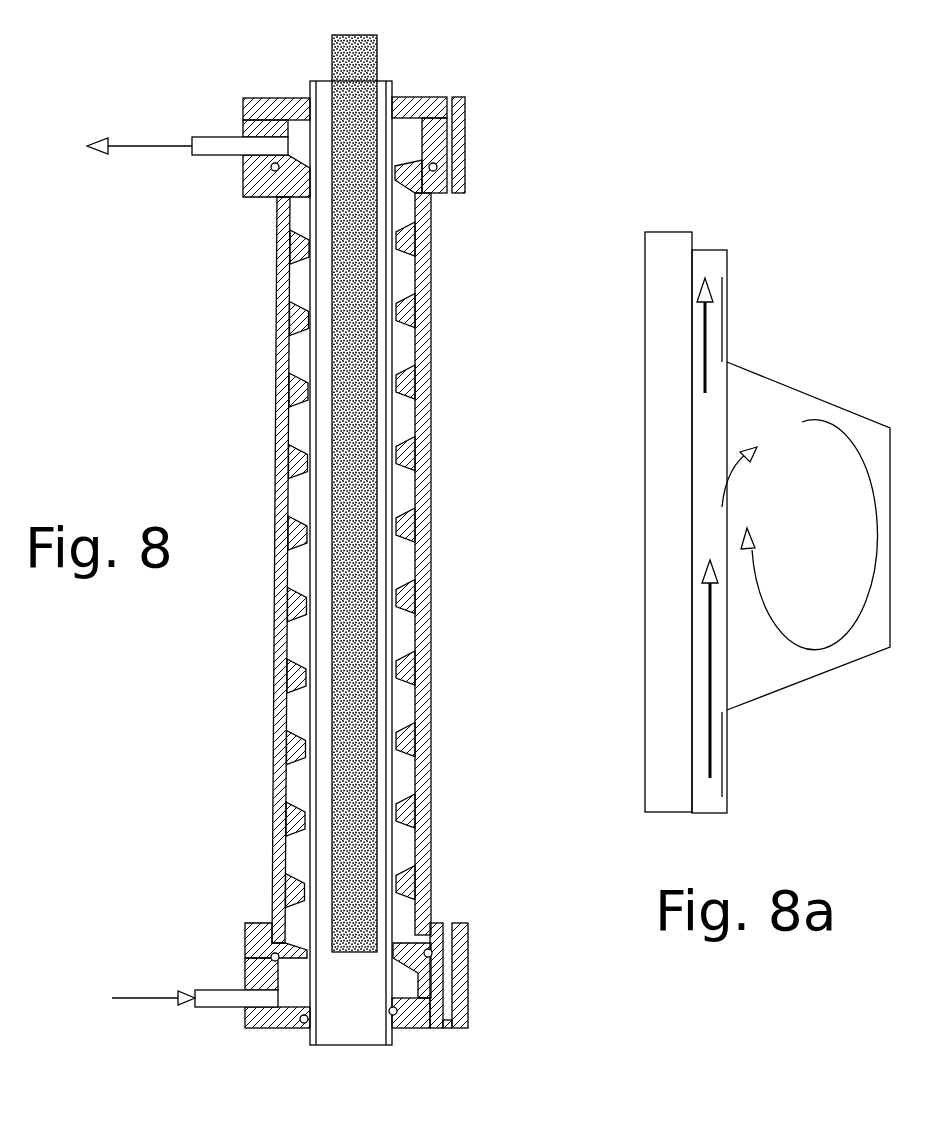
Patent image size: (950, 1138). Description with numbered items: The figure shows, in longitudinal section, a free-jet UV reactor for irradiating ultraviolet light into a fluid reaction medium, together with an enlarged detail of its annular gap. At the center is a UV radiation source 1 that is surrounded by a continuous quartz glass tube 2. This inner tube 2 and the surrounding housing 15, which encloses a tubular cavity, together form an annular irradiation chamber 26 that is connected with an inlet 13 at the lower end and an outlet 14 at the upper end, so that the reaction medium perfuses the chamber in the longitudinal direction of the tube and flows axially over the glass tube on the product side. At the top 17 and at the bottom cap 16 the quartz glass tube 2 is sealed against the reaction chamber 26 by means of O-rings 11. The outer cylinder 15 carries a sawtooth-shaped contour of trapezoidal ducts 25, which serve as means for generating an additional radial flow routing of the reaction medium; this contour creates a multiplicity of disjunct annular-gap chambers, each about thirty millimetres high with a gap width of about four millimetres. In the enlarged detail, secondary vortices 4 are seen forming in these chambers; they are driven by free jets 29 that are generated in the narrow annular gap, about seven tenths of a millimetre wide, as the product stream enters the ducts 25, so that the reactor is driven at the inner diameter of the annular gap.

In FIG. 8, the UV radiation source 1 is at (377, 68).
In FIG. 8, the quartz glass tube 2 is at (392, 87).
In FIG. 8a, the quartz glass tube 2 is at (677, 510).
In FIG. 8a, the secondary vortices 4 is at (815, 652).
In FIG. 8, the O-rings 11 is at (312, 100).
In FIG. 8, the inlet 13 is at (212, 988).
In FIG. 8, the outlet 14 is at (223, 135).
In FIG. 8, the housing 15 is at (432, 263).
In FIG. 8, the bottom cap 16 is at (445, 995).
In FIG. 8, the top 17 is at (452, 110).
In FIG. 8, the ducts 25 is at (418, 347).
In FIG. 8, the irradiation chamber 26 is at (308, 420).
In FIG. 8a, the irradiation chamber 26 is at (767, 413).
In FIG. 8a, the free jets 29 is at (712, 747).